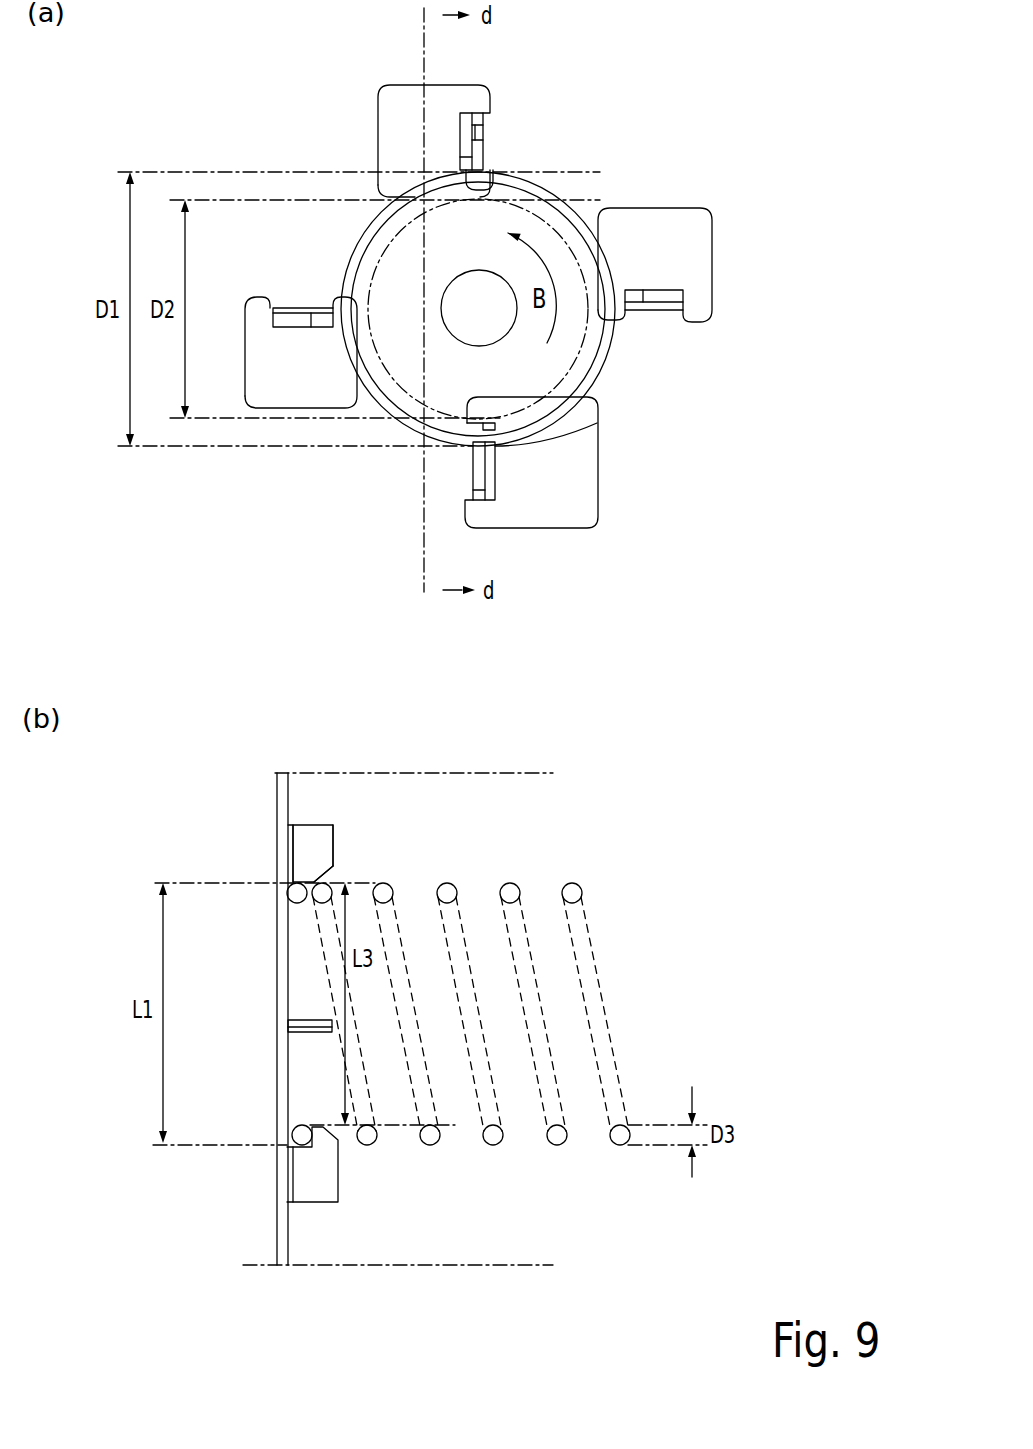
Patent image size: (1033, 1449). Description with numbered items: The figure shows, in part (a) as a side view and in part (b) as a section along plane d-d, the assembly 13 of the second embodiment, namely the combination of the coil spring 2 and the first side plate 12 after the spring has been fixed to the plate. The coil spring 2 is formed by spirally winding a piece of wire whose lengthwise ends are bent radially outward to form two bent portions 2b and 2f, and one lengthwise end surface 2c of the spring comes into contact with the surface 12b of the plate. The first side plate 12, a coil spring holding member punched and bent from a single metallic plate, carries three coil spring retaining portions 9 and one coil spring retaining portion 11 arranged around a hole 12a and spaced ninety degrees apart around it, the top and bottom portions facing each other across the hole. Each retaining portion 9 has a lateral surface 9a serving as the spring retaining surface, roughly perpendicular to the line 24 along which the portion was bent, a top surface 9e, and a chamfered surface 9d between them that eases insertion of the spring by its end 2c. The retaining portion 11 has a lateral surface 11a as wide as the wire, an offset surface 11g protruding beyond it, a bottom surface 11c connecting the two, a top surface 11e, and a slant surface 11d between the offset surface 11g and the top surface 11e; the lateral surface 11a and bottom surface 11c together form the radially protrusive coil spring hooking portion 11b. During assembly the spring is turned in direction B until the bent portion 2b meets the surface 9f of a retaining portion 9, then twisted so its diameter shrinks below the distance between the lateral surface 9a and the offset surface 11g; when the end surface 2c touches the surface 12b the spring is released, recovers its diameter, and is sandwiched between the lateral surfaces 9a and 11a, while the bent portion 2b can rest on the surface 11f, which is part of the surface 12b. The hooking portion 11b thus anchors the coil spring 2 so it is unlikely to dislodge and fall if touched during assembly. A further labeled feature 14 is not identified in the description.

The coil spring 2 is at (428, 860).
The bent portion 2b is at (485, 160).
The lengthwise end surface 2c is at (290, 893).
The bent portion 2f is at (472, 462).
The coil spring retaining portion 9 is at (366, 84).
The lateral surface 9a is at (494, 180).
The chamfered surface 9d is at (460, 158).
The top surface 9e is at (462, 113).
The surface of retaining portion 9f is at (483, 145).
The coil spring retaining portion 11 is at (507, 525).
The lateral surface 11a is at (290, 1130).
The coil spring hooking portion 11b is at (474, 412).
The bottom surface 11c is at (340, 1188).
The slant surface 11d is at (530, 447).
The top surface 11e is at (490, 483).
The surface of retaining portion 11f is at (212, 1257).
The offset surface 11g is at (560, 440).
The first side plate 12 is at (294, 532).
The hole 12a is at (478, 270).
The surface of first side plate 12b is at (200, 483).
The assembly 13 is at (628, 134).
The tension unit 14 is at (714, 163).
The line of bending 24 is at (482, 118).